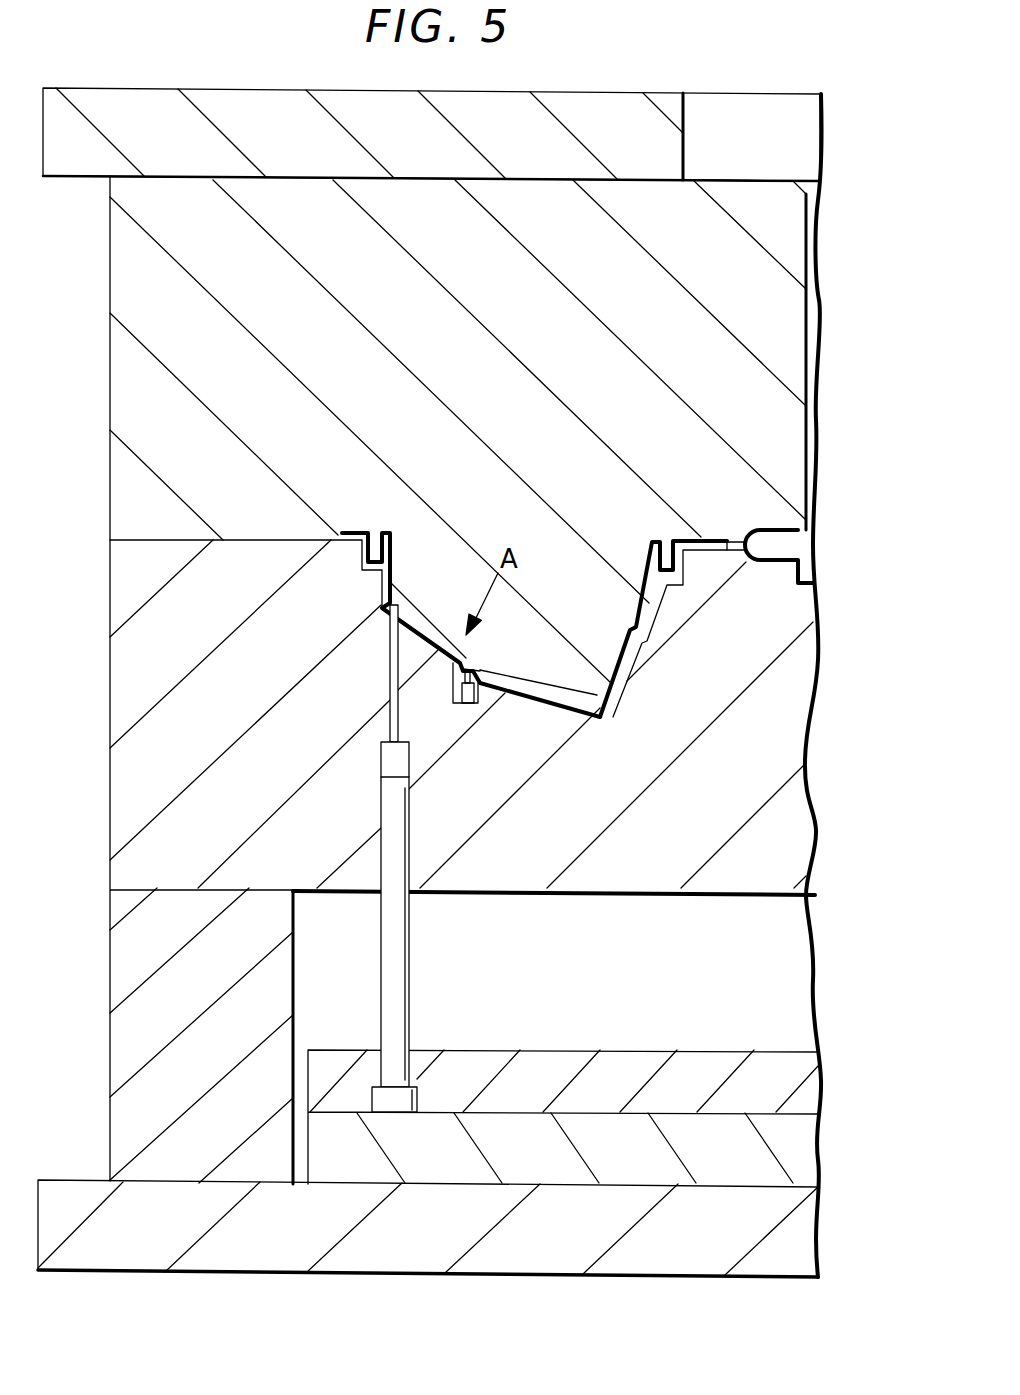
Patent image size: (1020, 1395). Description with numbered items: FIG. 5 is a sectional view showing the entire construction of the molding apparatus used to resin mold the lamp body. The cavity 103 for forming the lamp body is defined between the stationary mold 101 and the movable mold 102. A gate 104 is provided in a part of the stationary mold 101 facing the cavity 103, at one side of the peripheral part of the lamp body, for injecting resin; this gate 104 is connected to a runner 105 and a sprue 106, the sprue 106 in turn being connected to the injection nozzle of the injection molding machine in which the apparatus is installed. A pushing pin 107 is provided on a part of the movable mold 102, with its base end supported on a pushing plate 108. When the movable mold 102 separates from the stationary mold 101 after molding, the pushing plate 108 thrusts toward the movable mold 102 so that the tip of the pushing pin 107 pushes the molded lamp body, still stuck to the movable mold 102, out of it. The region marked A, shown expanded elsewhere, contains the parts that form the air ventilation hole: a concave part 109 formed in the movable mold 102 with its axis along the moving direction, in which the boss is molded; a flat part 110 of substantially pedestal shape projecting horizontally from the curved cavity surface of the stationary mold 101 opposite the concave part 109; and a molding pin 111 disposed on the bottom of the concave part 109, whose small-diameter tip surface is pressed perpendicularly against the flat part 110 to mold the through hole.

The stationary mold 101 is at (128, 365).
The movable mold 102 is at (128, 685).
The cavity 103 is at (647, 615).
The gate 104 is at (735, 552).
The runner 105 is at (772, 550).
The sprue 106 is at (812, 375).
The pushing pin 107 is at (400, 843).
The pushing plate 108 is at (548, 1075).
The concave part 109 is at (480, 693).
The flat part 110 is at (473, 657).
The molding pin 111 is at (472, 703).